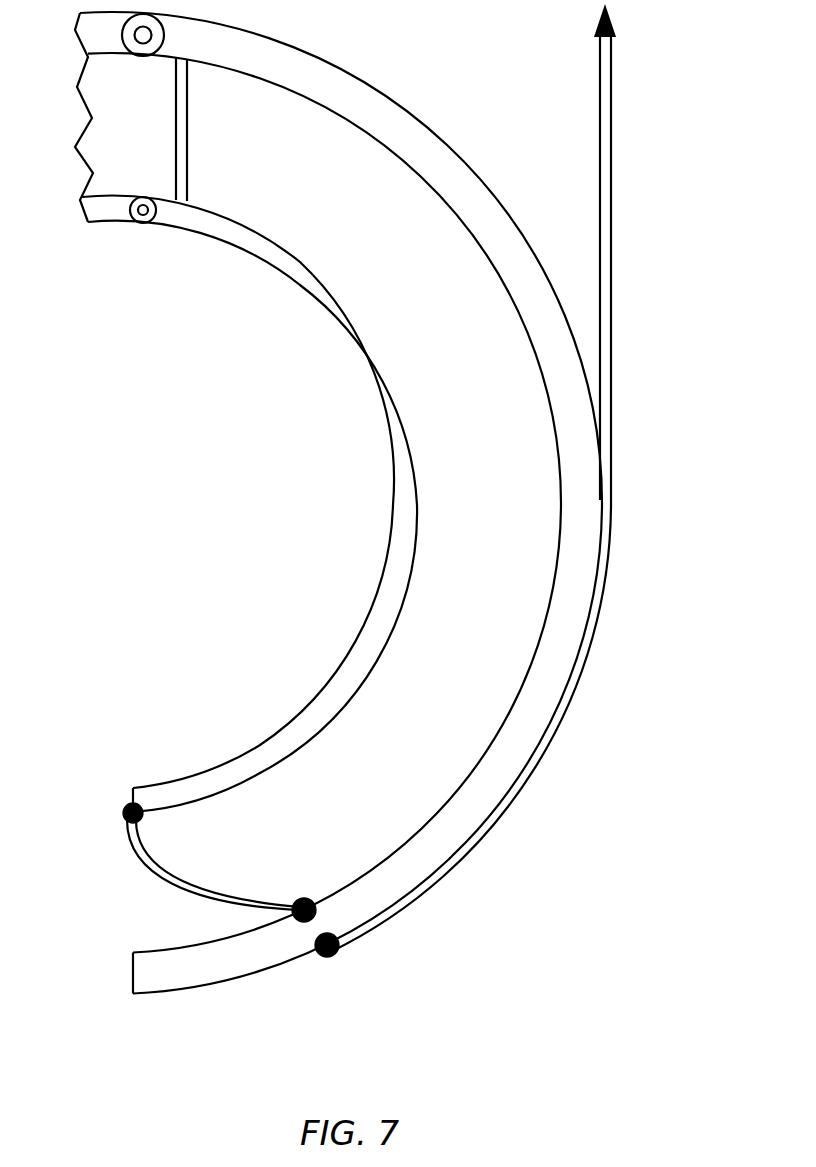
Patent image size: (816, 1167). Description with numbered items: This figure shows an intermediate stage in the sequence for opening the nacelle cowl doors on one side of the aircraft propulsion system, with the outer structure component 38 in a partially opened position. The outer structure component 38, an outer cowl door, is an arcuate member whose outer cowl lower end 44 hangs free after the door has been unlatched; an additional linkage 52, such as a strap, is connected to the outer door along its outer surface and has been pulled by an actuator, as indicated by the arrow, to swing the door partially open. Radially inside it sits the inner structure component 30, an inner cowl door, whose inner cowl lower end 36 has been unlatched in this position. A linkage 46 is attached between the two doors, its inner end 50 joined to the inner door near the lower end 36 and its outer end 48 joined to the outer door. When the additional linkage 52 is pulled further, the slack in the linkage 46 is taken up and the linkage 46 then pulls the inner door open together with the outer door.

The inner structure component 30 is at (425, 553).
The inner cowl lower end 36 is at (122, 813).
The outer structure component 38 is at (457, 141).
The outer cowl lower end 44 is at (133, 972).
The linkage 46 is at (127, 885).
The outer end 48 is at (305, 898).
The inner end 50 is at (140, 800).
The additional linkage 52 is at (612, 190).